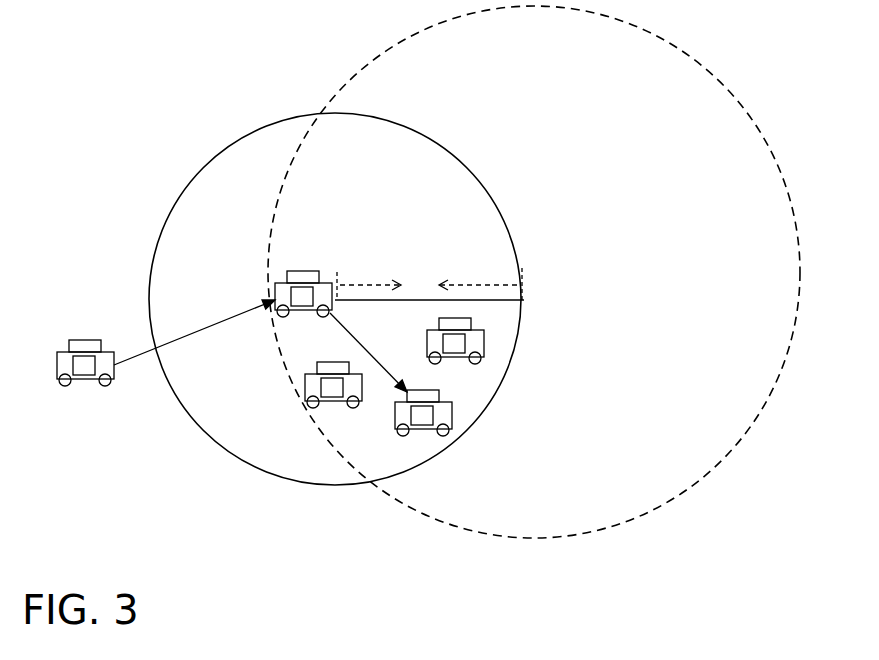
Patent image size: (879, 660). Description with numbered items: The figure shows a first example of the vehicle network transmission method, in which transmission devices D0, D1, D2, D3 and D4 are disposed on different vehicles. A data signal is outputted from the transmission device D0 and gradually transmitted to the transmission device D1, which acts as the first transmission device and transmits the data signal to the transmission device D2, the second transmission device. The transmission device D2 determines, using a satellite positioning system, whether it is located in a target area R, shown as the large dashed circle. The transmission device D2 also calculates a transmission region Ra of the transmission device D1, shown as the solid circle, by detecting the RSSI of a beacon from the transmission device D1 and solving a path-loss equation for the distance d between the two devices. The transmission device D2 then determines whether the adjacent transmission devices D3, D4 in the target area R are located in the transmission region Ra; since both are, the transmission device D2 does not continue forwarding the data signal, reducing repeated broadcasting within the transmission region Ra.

The transmission region Ra is at (306, 485).
The target area R is at (612, 528).
The distance d is at (429, 285).
The transmission device D0 is at (96, 360).
The transmission device D1 is at (313, 292).
The transmission device D2 is at (433, 408).
The transmission device D3 is at (465, 340).
The transmission device D4 is at (340, 402).